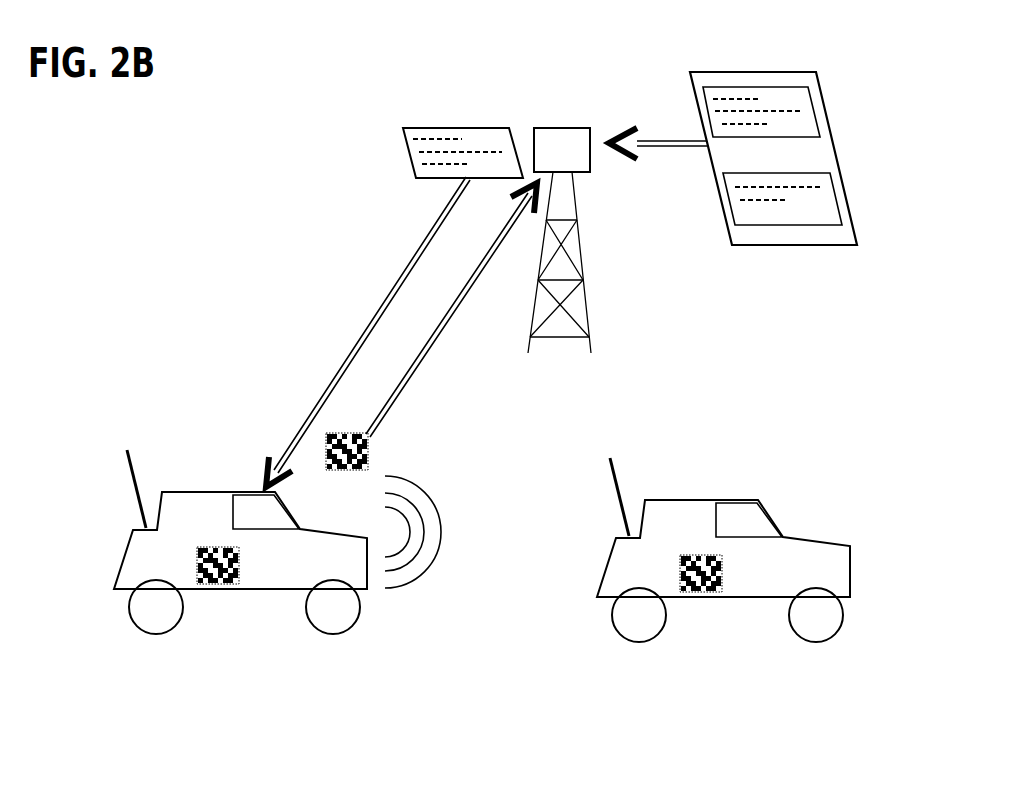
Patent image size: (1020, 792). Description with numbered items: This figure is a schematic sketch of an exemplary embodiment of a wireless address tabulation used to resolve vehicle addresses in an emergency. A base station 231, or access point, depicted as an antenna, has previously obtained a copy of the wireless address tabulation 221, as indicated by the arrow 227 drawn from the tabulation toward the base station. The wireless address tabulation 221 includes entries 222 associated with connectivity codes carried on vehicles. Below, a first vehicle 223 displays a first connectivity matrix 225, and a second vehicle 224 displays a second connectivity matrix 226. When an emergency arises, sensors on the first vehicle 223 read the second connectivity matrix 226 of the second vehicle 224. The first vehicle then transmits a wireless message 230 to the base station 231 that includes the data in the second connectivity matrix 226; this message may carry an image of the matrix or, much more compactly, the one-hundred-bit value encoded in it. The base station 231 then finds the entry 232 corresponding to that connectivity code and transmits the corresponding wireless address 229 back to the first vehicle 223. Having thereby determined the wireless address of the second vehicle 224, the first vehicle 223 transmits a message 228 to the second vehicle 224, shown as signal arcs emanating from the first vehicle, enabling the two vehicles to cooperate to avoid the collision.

The wireless address tabulation 221 is at (785, 72).
The entries 222 is at (822, 172).
The first vehicle 223 is at (120, 567).
The second vehicle 224 is at (843, 537).
The first connectivity matrix 225 is at (235, 580).
The second connectivity matrix 226 is at (720, 575).
The arrow 227 is at (680, 147).
The message 228 is at (420, 573).
The wireless address 229 is at (375, 313).
The wireless message 230 is at (408, 383).
The base station 231 is at (547, 130).
The entry 232 is at (417, 128).